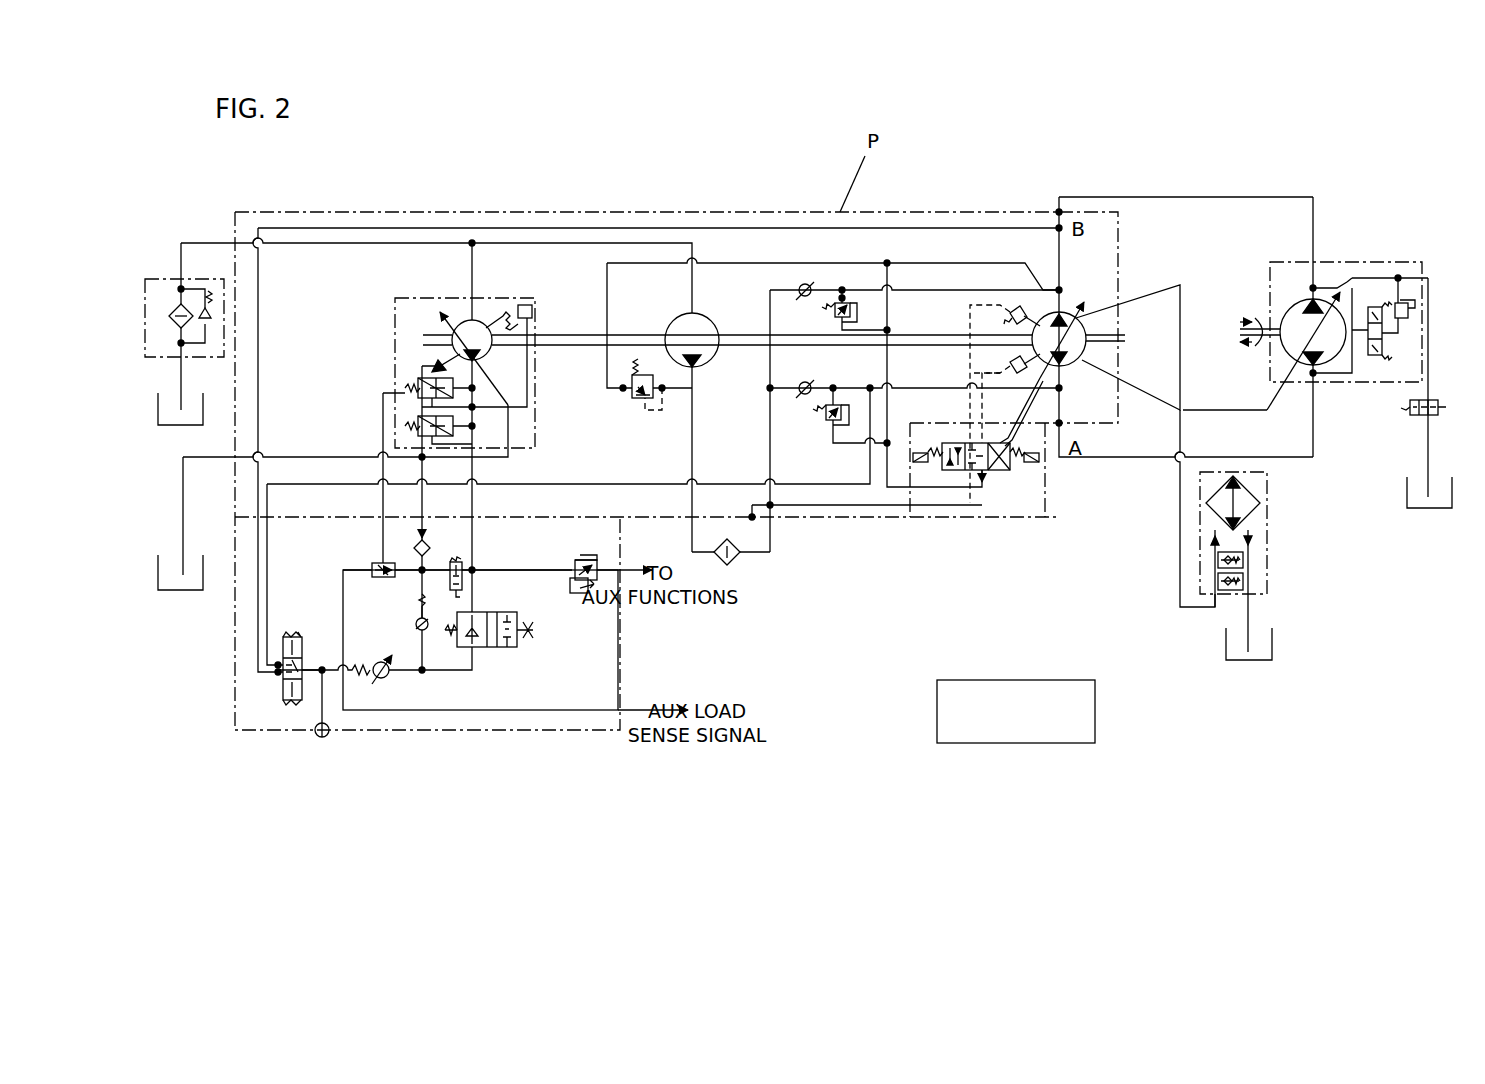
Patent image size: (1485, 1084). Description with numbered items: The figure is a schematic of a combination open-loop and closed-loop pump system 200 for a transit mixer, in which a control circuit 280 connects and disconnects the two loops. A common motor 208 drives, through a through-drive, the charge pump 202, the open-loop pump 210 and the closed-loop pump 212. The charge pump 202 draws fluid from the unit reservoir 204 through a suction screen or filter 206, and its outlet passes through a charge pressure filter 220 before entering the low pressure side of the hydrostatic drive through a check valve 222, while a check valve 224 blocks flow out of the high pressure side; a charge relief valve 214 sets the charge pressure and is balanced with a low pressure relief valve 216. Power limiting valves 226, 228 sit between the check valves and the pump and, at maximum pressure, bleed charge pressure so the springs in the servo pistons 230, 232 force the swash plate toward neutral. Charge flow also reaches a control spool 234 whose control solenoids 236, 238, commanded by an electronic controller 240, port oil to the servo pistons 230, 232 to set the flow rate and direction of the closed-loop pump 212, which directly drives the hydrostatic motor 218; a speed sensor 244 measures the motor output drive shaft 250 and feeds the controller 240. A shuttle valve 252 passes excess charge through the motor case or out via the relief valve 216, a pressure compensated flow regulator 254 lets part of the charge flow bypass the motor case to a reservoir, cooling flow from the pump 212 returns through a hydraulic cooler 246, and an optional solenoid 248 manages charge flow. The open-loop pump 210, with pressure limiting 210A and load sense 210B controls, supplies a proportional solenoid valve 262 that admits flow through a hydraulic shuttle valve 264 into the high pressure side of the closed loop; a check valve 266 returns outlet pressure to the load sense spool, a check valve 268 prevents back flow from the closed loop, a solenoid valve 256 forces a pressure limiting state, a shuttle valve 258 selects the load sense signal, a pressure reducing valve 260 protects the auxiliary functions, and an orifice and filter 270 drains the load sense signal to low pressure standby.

The pump system 200 is at (762, 138).
The charge pump 202 is at (678, 320).
The unit reservoir 204 is at (140, 400).
The suction screen or filter 206 is at (150, 340).
The motor 208 is at (1096, 344).
The open-loop pump 210 is at (466, 316).
The pressure limiting feedback control 210A is at (405, 426).
The load sense feedback control 210B is at (405, 388).
The closed-loop pump 212 is at (1069, 360).
The charge relief valve 214 is at (638, 400).
The low pressure relief valve 216 is at (1393, 304).
The hydrostatic motor 218 is at (1283, 310).
The charge pressure filter 220 is at (736, 560).
The check valve 222 is at (804, 396).
The check valve 224 is at (797, 288).
The power limiting valve 226 is at (829, 425).
The power limiting valve 228 is at (845, 300).
The servo piston 230 is at (1018, 362).
The servo piston 232 is at (1020, 308).
The control spool 234 is at (990, 470).
The control solenoid 236 is at (918, 465).
The control solenoid 238 is at (1038, 462).
The electronic controller 240 is at (1015, 743).
The speed sensor 244 is at (1237, 343).
The hydraulic cooler 246 is at (1263, 580).
The solenoid 248 is at (1427, 418).
The motor output drive shaft 250 is at (1230, 325).
The shuttle valve 252 is at (1378, 352).
The pressure compensated flow regulator 254 is at (1412, 276).
The solenoid valve 256 is at (463, 563).
The shuttle valve 258 is at (372, 565).
The pressure reducing valve 260 is at (580, 562).
The proportional solenoid valve 262 is at (506, 648).
The hydraulic shuttle valve 264 is at (296, 636).
The check valve 266 is at (416, 626).
The check valve 268 is at (387, 676).
The orifice and filter 270 is at (428, 547).
The control circuit 280 is at (622, 674).